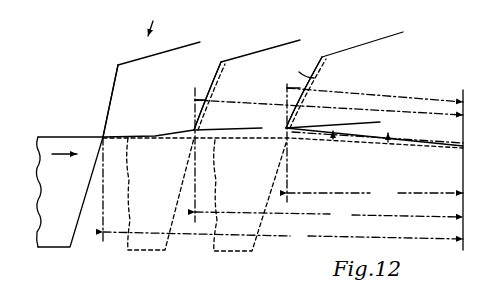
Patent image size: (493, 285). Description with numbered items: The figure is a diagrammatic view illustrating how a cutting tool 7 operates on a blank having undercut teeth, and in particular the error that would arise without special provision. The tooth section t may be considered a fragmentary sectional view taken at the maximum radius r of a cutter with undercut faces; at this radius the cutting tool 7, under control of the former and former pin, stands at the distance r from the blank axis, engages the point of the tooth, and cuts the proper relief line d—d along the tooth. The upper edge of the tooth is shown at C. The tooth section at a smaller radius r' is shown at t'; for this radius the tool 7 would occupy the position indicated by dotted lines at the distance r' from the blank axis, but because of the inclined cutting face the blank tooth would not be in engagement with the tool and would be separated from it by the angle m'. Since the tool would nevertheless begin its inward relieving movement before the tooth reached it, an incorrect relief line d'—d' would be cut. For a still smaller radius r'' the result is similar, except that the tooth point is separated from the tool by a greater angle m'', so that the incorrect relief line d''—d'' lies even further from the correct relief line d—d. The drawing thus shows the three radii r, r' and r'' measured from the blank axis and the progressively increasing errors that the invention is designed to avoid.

The cutting tool 7 is at (40, 198).
The correct relief line d— d is at (203, 86).
The incorrect relief line d'— d' is at (190, 154).
The incorrect relief line d''— d'' is at (308, 141).
The tooth section at maximum radius t is at (102, 101).
The tooth section at smaller radius t' is at (243, 85).
The tooth top surface C is at (159, 64).
The separation angle at radius r' m' is at (344, 145).
The separation angle at radius r'' m'' is at (401, 147).
The maximum radius r is at (283, 236).
The smaller radius r' is at (329, 214).
The still smaller radius r'' is at (329, 144).